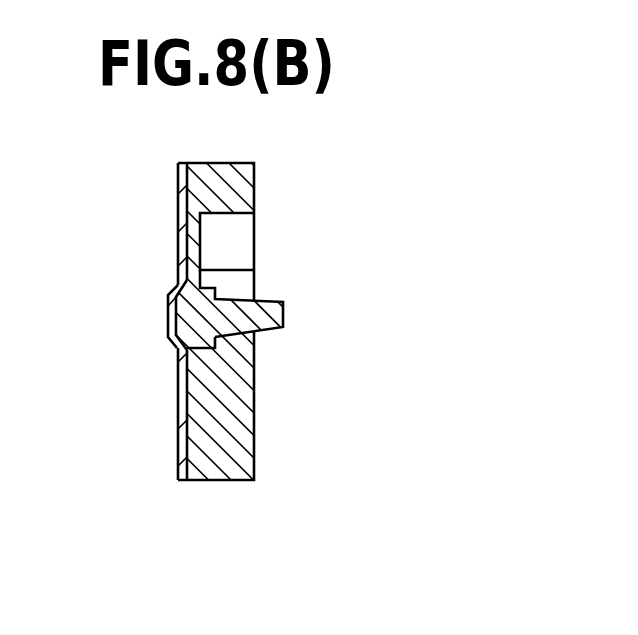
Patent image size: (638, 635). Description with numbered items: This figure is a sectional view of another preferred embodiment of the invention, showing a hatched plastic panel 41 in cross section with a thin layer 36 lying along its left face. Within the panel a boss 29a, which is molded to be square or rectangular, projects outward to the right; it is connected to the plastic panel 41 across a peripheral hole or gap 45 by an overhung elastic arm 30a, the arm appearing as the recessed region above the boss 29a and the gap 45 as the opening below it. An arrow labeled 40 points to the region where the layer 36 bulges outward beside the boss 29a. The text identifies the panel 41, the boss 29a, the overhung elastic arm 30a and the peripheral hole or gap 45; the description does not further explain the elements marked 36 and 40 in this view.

The plastic panel 41 is at (232, 181).
The thin plate 36 is at (180, 183).
The engaging portion 40 is at (163, 353).
The overhung elastic arm 30a is at (200, 236).
The boss 29a is at (283, 312).
The peripheral hole or gap 45 is at (226, 352).